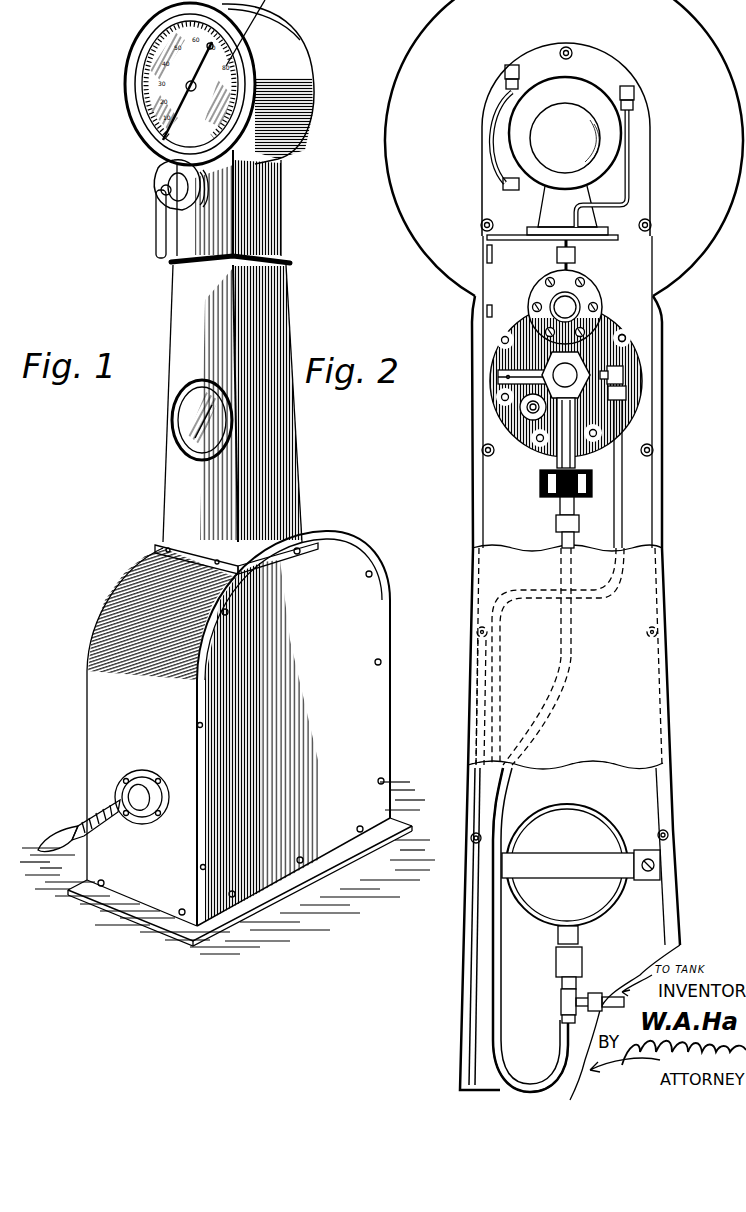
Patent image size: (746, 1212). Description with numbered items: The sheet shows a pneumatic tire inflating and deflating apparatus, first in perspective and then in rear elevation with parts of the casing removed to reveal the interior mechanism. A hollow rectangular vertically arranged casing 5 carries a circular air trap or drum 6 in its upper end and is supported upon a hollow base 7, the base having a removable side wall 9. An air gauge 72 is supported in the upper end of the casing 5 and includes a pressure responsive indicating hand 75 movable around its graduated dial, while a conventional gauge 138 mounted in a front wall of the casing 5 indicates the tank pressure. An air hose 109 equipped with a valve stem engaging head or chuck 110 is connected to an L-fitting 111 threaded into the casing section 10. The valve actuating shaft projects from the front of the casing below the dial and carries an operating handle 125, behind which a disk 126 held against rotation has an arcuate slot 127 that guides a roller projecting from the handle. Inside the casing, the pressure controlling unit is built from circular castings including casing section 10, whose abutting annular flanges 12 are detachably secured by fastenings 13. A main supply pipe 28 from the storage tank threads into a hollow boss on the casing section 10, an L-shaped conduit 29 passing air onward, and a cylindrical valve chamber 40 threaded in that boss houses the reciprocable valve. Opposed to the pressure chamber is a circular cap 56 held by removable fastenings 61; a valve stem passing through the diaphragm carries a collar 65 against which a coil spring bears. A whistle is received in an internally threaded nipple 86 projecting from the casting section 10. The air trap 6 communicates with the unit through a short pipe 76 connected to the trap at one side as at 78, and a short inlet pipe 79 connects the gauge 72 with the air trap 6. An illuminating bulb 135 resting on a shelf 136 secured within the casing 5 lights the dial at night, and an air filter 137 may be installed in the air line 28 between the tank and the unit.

In FIG. 1, the casing 5 is at (183, 238).
In FIG. 2, the casing 5 is at (652, 452).
In FIG. 1, the air trap 6 is at (288, 90).
In FIG. 2, the air trap 6 is at (643, 665).
In FIG. 1, the hollow base 7 is at (136, 576).
In FIG. 1, the removable side wall 9 is at (338, 565).
In FIG. 2, the casing section 10 is at (632, 345).
In FIG. 2, the annular flanges 12 is at (630, 414).
In FIG. 2, the fastenings 13 is at (622, 333).
In FIG. 2, the main supply pipe 28 is at (576, 447).
In FIG. 2, the L-shaped conduit 29 is at (500, 378).
In FIG. 2, the valve chamber 40 is at (566, 376).
In FIG. 2, the circular cap 56 is at (562, 304).
In FIG. 2, the removable fastenings 61 is at (585, 296).
In FIG. 2, the collar 65 is at (535, 415).
In FIG. 2, the air gauge 72 is at (572, 92).
In FIG. 1, the indicating hand 75 is at (182, 108).
In FIG. 2, the short pipe 76 is at (630, 184).
In FIG. 2, the air trap connection 78 is at (636, 92).
In FIG. 2, the short inlet pipe 79 is at (496, 118).
In FIG. 2, the internally threaded nipple 86 is at (520, 408).
In FIG. 2, the air hose 109 is at (626, 498).
In FIG. 1, the chuck 110 is at (68, 838).
In FIG. 2, the L-fitting 111 is at (625, 372).
In FIG. 1, the operating handle 125 is at (157, 228).
In FIG. 1, the disk 126 is at (166, 168).
In FIG. 1, the arcuate slot 127 is at (174, 198).
In FIG. 2, the illuminating bulb 135 is at (588, 133).
In FIG. 2, the shelf 136 is at (574, 252).
In FIG. 2, the air filter 137 is at (550, 492).
In FIG. 1, the conventional gauge 138 is at (172, 425).
In FIG. 2, the conventional gauge 138 is at (590, 830).